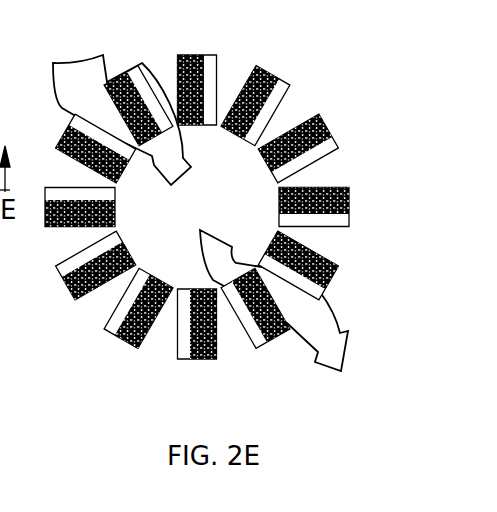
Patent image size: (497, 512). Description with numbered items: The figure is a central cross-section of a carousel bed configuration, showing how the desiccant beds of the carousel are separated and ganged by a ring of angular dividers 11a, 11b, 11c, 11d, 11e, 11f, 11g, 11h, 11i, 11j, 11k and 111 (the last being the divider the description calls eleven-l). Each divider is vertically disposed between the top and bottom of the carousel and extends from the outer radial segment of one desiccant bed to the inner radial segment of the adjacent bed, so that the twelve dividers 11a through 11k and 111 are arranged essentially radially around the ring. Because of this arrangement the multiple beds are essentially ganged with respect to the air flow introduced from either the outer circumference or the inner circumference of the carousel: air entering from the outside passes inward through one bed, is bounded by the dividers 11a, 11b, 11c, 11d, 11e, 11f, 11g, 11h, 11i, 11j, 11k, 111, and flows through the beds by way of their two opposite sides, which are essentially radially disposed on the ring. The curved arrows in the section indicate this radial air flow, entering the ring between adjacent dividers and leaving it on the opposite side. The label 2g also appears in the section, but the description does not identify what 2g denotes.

The angular divider 111 is at (78, 118).
The angular divider 11a is at (80, 187).
The angular divider 11b is at (70, 258).
The angular divider 11c is at (108, 320).
The angular divider 11d is at (177, 342).
The angular divider 11e is at (249, 347).
The angular divider 11f is at (322, 292).
The angular divider 11g is at (348, 220).
The angular divider 11h is at (333, 145).
The angular divider 11i is at (282, 90).
The angular divider 11j is at (215, 66).
The angular divider 11k is at (142, 67).
The section indicator 2g is at (16, 354).